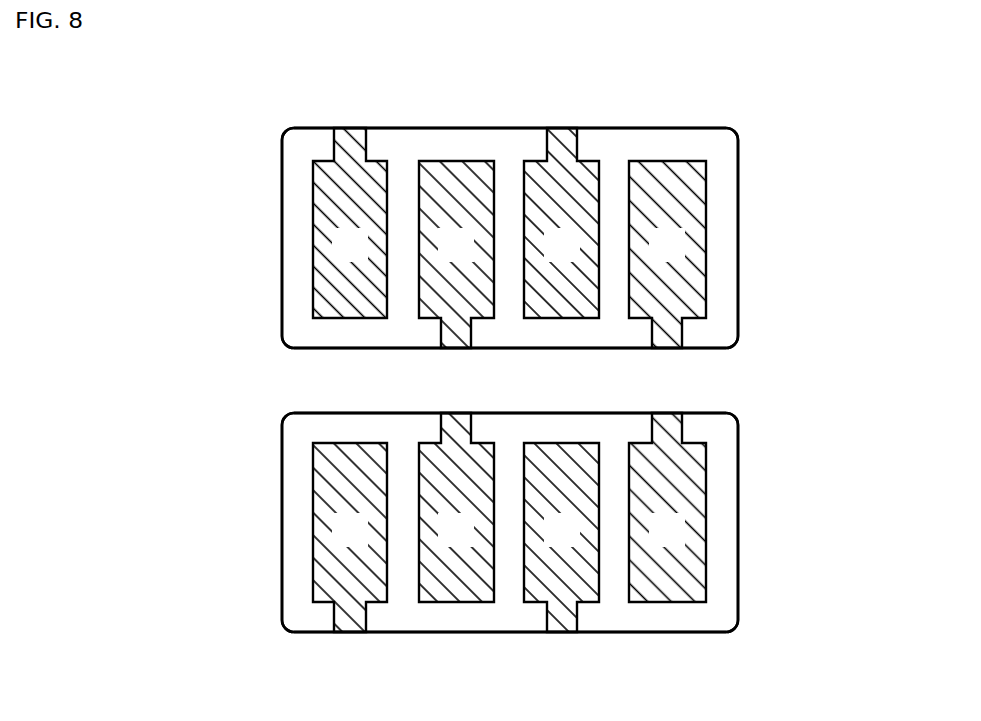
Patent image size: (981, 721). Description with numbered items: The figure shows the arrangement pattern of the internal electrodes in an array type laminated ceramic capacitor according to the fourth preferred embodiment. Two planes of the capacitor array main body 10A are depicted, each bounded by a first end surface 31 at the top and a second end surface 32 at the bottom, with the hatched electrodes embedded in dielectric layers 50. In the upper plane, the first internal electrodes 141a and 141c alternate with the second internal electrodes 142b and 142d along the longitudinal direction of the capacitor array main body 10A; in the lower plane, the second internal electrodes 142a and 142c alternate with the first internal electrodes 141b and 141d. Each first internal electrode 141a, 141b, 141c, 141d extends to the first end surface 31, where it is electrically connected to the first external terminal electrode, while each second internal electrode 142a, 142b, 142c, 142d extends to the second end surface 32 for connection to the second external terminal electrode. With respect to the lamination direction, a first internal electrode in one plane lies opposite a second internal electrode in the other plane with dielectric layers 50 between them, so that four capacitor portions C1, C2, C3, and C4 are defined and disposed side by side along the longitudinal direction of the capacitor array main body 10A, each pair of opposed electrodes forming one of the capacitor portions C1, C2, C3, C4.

The capacitor array main body 10A is at (757, 157).
The dielectric layer 50 is at (739, 240).
The first end surface 31 is at (393, 128).
The second end surface 32 is at (490, 349).
The first internal electrode 141a is at (313, 220).
The first internal electrode 141b is at (452, 607).
The first internal electrode 141c is at (535, 156).
The first internal electrode 141d is at (670, 607).
The second internal electrode 142a is at (333, 615).
The second internal electrode 142b is at (456, 161).
The second internal electrode 142c is at (547, 615).
The second internal electrode 142d is at (676, 161).
The capacitor portion C1 is at (347, 325).
The capacitor portion C2 is at (430, 325).
The capacitor portion C3 is at (563, 325).
The capacitor portion C4 is at (642, 325).